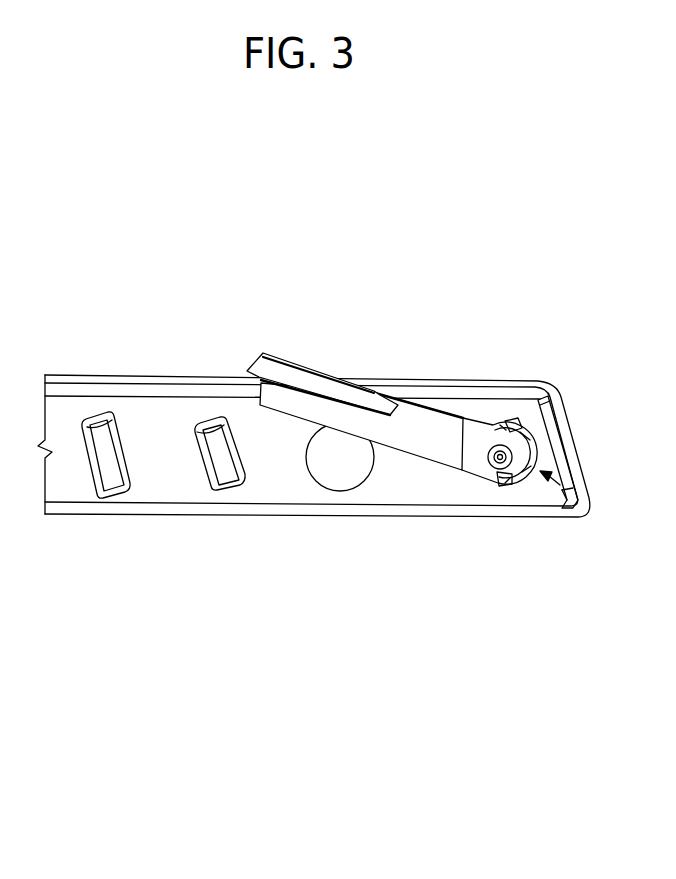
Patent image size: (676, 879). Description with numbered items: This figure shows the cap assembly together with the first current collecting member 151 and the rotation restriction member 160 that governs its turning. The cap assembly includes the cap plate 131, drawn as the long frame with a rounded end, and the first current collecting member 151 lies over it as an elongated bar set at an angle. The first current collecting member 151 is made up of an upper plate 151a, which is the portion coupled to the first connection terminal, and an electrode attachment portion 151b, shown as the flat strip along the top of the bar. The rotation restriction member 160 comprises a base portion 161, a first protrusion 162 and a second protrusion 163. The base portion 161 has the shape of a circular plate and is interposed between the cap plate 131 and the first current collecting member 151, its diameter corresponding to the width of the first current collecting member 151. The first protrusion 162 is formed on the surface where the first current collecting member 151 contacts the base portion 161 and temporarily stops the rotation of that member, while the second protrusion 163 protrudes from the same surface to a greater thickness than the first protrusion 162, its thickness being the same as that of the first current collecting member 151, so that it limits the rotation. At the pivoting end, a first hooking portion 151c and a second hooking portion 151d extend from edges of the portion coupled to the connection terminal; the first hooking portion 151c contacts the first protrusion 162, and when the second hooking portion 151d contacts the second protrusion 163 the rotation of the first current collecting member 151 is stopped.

The cap plate 131 is at (560, 423).
The first current collecting member 151 is at (392, 376).
The upper plate 151a is at (413, 420).
The electrode attachment portion 151b is at (382, 303).
The first hooking portion 151c is at (513, 425).
The second hooking portion 151d is at (503, 485).
The rotation restriction member 160 is at (574, 504).
The base portion 161 is at (527, 450).
The first protrusion 162 is at (518, 427).
The second protrusion 163 is at (512, 477).